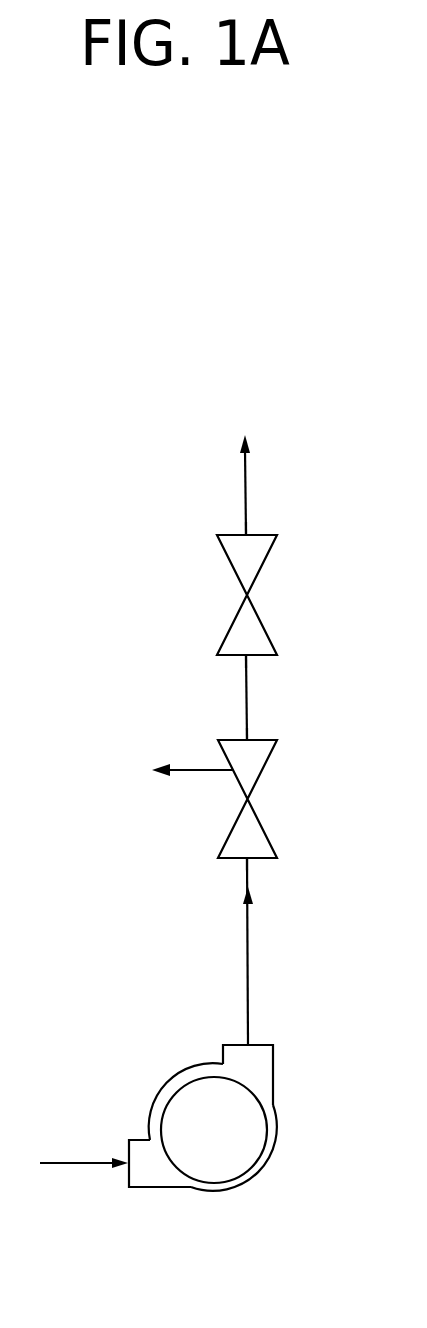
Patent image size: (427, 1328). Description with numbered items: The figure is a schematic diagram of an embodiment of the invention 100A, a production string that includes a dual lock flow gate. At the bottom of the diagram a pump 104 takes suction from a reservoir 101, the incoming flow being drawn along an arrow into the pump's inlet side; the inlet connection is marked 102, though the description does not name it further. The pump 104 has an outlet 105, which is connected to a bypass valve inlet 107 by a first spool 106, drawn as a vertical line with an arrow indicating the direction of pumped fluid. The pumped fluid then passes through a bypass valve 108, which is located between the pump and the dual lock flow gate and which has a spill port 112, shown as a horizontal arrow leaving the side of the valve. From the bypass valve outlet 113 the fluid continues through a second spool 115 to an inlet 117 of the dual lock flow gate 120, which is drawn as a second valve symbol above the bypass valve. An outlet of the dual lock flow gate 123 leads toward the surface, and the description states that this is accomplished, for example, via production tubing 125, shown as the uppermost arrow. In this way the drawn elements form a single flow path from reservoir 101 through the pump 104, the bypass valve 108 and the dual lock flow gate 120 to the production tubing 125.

The embodiment of the invention 100A is at (160, 480).
The reservoir 101 is at (67, 1160).
The pump inlet port 102 is at (125, 1157).
The pump 104 is at (273, 1075).
The pump outlet 105 is at (248, 1037).
The first spool 106 is at (249, 950).
The bypass valve inlet 107 is at (250, 860).
The bypass valve 108 is at (263, 823).
The spill port 112 is at (187, 768).
The bypass valve outlet 113 is at (248, 735).
The second spool 115 is at (248, 685).
The dual lock flow gate inlet 117 is at (248, 657).
The dual lock flow gate 120 is at (268, 630).
The dual lock flow gate outlet 123 is at (246, 528).
The production tubing 125 is at (246, 482).